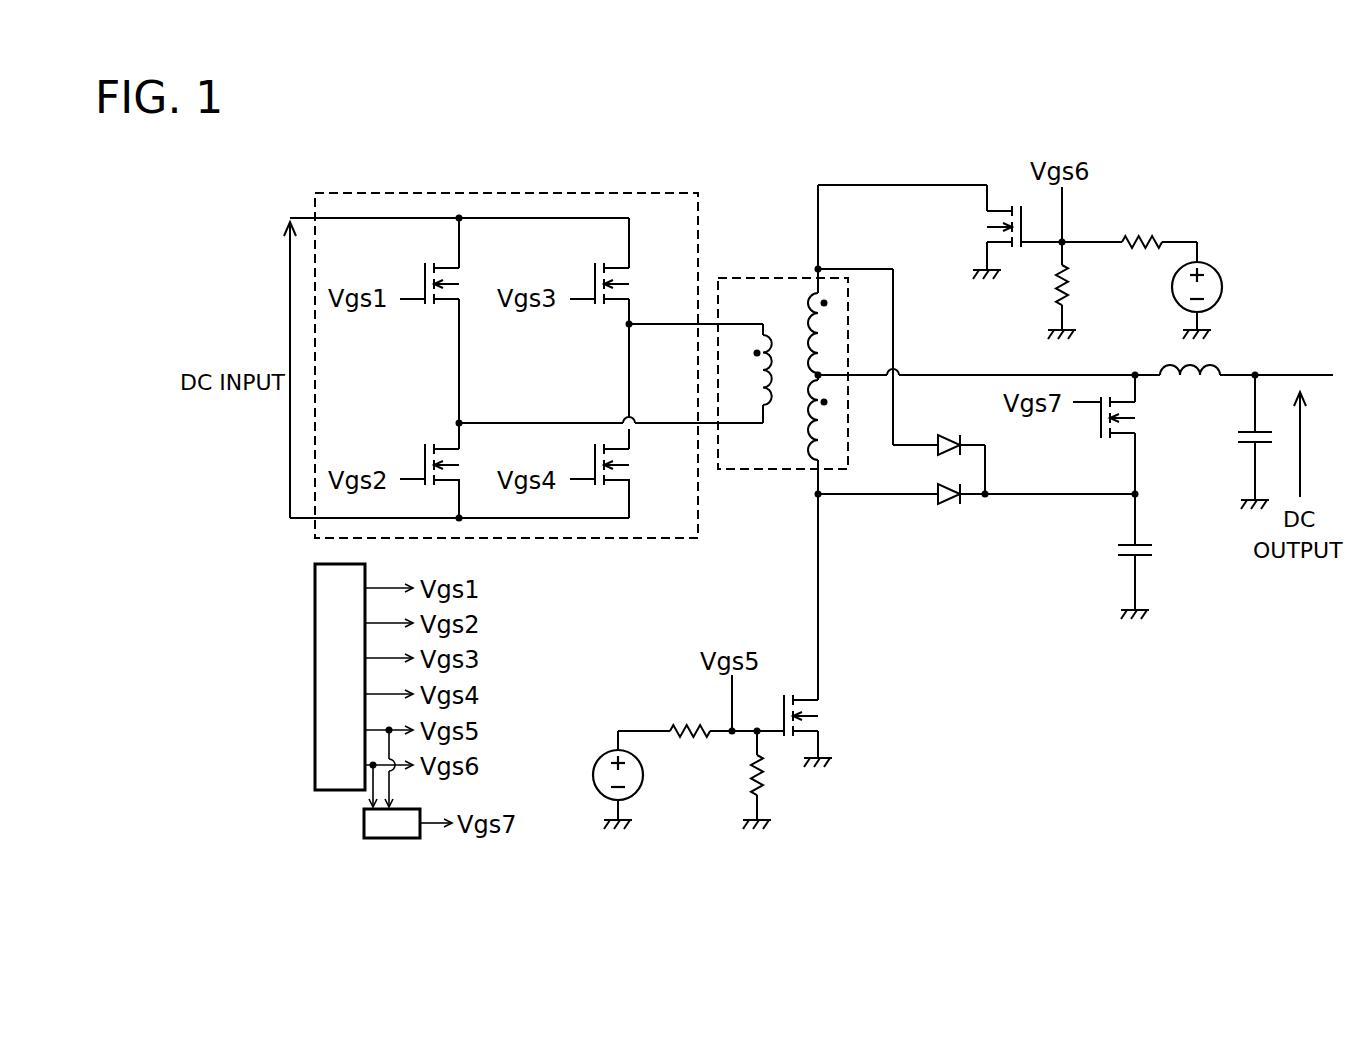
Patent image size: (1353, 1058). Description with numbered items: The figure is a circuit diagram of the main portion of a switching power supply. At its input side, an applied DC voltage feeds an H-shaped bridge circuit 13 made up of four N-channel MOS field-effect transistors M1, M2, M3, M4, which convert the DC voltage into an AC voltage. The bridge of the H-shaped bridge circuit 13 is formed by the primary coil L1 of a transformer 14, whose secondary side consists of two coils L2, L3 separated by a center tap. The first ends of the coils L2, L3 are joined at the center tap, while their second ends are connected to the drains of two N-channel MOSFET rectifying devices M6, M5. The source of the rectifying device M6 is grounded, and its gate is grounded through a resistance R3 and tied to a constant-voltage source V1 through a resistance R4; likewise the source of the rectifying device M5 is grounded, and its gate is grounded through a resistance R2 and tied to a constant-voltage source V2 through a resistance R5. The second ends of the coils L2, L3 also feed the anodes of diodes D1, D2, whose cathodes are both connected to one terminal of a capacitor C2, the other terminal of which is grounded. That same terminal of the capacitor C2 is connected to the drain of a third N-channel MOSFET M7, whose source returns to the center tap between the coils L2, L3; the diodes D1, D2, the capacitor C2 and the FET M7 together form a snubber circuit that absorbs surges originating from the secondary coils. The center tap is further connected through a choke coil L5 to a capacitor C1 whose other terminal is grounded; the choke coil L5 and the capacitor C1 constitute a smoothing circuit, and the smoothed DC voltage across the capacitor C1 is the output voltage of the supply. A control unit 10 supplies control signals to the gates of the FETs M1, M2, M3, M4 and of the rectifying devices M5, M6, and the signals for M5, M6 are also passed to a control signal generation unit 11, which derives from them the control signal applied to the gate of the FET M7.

The control unit 10 is at (315, 610).
The control signal generation unit 11 is at (364, 825).
The H-shaped bridge circuit 13 is at (638, 193).
The transformer 14 is at (737, 278).
The N-channel MOS field-effect transistor M1 is at (462, 289).
The N-channel MOS field-effect transistor M2 is at (462, 470).
The N-channel MOS field-effect transistor M3 is at (632, 289).
The N-channel MOS field-effect transistor M4 is at (632, 470).
The rectifying device M5 is at (822, 718).
The rectifying device M6 is at (977, 222).
The N-channel MOSFET (third switch) M7 is at (1100, 441).
The primary coil L1 is at (778, 337).
The secondary coil L2 is at (806, 327).
The secondary coil L3 is at (803, 417).
The choke coil L5 is at (1180, 382).
The capacitor C1 is at (1238, 443).
The capacitor C2 is at (1157, 553).
The diode D1 is at (948, 432).
The diode D2 is at (930, 485).
The resistance R2 is at (745, 769).
The resistance R3 is at (1075, 285).
The resistance R4 is at (1148, 228).
The resistance R5 is at (680, 720).
The constant-voltage source V1 is at (1223, 277).
The constant-voltage source V2 is at (607, 752).